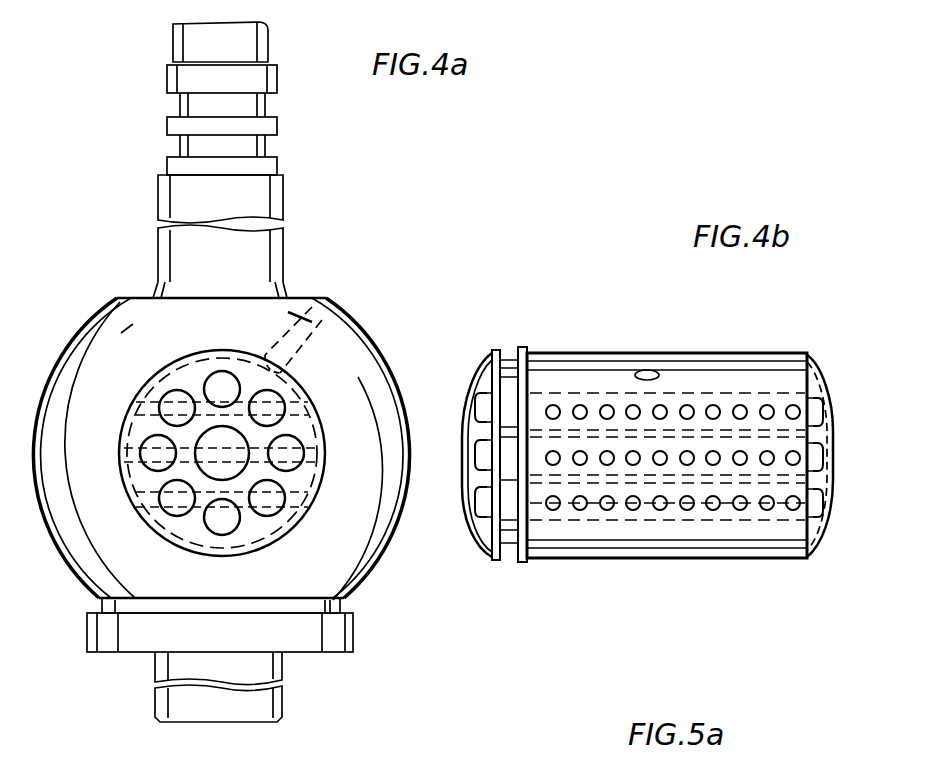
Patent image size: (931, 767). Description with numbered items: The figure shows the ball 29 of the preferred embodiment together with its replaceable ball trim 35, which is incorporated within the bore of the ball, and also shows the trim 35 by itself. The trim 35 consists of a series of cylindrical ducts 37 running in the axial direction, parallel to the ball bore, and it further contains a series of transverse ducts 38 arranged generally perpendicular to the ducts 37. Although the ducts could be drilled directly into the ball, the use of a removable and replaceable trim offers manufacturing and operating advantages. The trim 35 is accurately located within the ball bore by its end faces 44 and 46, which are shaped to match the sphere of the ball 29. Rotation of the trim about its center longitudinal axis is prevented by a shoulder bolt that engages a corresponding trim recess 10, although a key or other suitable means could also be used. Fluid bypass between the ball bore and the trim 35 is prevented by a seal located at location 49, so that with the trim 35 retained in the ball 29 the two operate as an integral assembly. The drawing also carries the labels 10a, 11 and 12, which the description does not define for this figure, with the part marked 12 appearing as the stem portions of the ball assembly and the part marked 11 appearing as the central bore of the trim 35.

In FIG. 4A, the trim recess 10 is at (302, 307).
In FIG. 4B, the marking opening 10a is at (647, 370).
In FIG. 4A, the central bore 11 is at (220, 453).
In FIG. 4A, the shaft / connecting stem 12 is at (243, 43).
In FIG. 4A, the ball 29 is at (213, 449).
In FIG. 4A, the replaceable trim 35 is at (187, 537).
In FIG. 4B, the replaceable trim 35 is at (745, 368).
In FIG. 4A, the cylindrical ducts 37 is at (167, 493).
In FIG. 4B, the cylindrical ducts 37 is at (480, 443).
In FIG. 4A, the transverse ducts 38 is at (307, 408).
In FIG. 4B, the transverse ducts 38 is at (605, 407).
In FIG. 4B, the face 44 is at (477, 537).
In FIG. 4B, the face 46 is at (820, 380).
In FIG. 4B, the seal location 49 is at (508, 357).